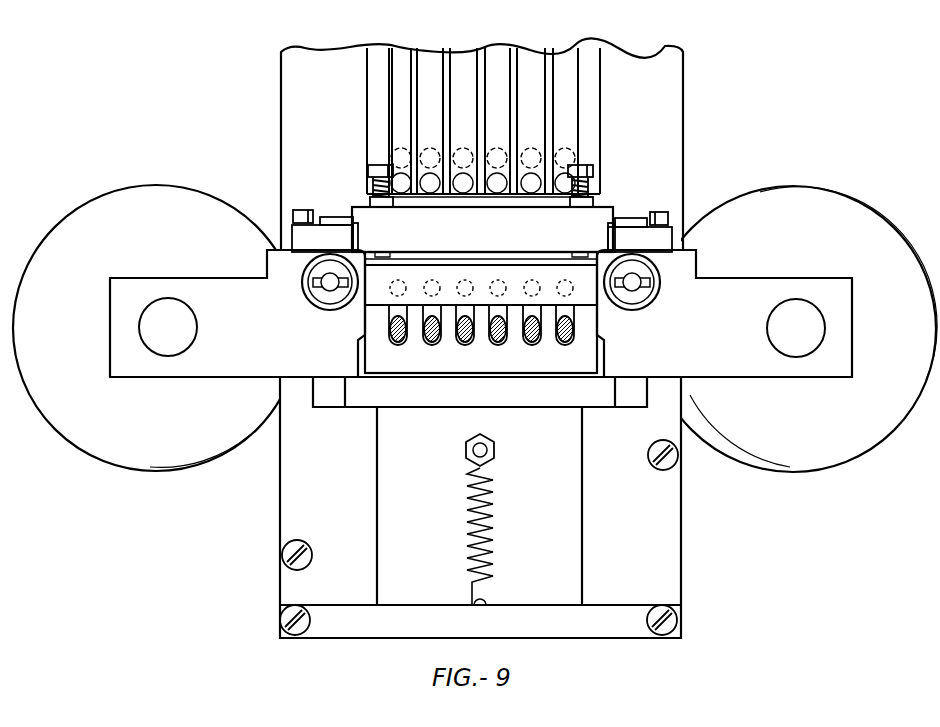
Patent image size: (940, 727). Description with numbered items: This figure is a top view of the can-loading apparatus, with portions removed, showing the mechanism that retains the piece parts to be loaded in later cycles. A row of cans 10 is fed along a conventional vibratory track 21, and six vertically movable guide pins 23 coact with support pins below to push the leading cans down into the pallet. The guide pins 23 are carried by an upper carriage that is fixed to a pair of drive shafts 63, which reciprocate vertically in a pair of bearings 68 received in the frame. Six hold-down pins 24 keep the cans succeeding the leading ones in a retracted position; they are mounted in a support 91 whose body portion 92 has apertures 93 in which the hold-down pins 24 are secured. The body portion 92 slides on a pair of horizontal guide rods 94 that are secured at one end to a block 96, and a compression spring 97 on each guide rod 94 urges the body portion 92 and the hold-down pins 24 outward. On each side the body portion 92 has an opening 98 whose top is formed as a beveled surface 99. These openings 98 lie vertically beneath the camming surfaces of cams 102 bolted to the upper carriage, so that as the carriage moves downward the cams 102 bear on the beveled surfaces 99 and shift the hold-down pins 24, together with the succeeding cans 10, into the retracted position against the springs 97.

The can 10 is at (402, 140).
The vibratory track 21 is at (398, 72).
The guide pin 23 is at (450, 341).
The hold-down pin 24 is at (481, 280).
The drive shaft 63 is at (167, 345).
The bearing 68 is at (103, 443).
The support 91 is at (352, 212).
The body portion 92 is at (437, 246).
The aperture 93 is at (395, 283).
The horizontal guide rod 94 is at (370, 183).
The block 96 is at (597, 306).
The compression spring 97 is at (392, 198).
The opening 98 is at (323, 221).
The beveled surface 99 is at (342, 221).
The cam 102 is at (295, 233).